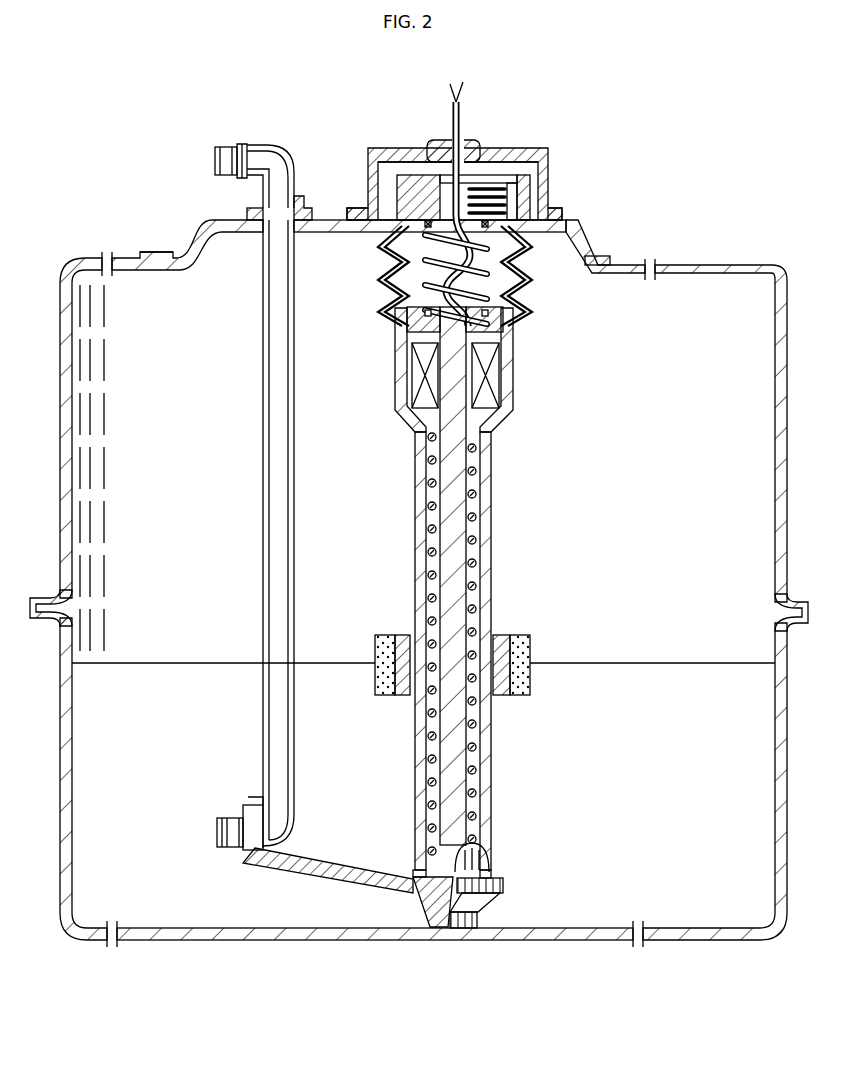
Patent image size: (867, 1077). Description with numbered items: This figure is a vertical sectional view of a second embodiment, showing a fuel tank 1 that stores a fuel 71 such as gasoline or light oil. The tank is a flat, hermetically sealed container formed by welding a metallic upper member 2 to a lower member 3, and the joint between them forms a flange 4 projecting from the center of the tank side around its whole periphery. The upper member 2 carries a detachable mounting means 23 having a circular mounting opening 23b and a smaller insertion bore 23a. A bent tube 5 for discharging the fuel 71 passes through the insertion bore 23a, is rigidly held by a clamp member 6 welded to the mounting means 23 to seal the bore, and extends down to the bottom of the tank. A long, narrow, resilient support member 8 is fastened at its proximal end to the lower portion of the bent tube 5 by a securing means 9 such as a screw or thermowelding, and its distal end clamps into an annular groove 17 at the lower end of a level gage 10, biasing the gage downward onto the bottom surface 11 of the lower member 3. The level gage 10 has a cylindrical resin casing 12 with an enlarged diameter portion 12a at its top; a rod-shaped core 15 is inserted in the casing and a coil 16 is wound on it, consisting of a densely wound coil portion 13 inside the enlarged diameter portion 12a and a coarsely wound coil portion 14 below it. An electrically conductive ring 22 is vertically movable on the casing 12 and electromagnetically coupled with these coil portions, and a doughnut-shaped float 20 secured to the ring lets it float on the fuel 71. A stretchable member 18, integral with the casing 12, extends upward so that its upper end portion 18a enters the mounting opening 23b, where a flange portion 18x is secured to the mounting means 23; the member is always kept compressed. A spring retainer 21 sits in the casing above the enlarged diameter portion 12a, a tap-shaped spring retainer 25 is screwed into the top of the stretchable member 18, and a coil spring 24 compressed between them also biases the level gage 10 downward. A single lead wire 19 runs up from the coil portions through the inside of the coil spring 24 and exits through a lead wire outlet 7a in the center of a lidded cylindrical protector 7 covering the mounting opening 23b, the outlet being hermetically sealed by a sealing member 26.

The fuel tank 1 is at (58, 282).
The upper member 2 is at (60, 418).
The lower member 3 is at (60, 764).
The flange 4 is at (46, 600).
The bent tube 5 is at (295, 514).
The clamp member 6 is at (300, 198).
The protector 7 is at (374, 150).
The lead wire outlet 7a is at (432, 148).
The support member 8 is at (280, 858).
The securing means 9 is at (248, 800).
The level gage 10 is at (412, 548).
The bottom surface 11 is at (270, 930).
The casing 12 is at (416, 480).
The enlarged diameter portion 12a is at (396, 386).
The densely wound coil portion 13 is at (500, 380).
The coarsely wound coil portion 14 is at (478, 470).
The core 15 is at (466, 590).
The coil 16 is at (478, 524).
The annular groove 17 is at (414, 895).
The stretchable member 18 is at (384, 310).
The upper end portion 18a is at (526, 244).
The flange portion 18x is at (372, 206).
The lead wire 19 is at (466, 126).
The float 20 is at (380, 634).
The spring retainer 21 is at (502, 322).
The electrically conductive ring 22 is at (401, 634).
The mounting means 23 is at (190, 250).
The insertion bore 23a is at (258, 222).
The mounting opening 23b is at (395, 232).
The coil spring 24 is at (516, 290).
The tap-shaped spring retainer 25 is at (510, 184).
The sealing member 26 is at (443, 140).
The fuel 71 is at (150, 662).